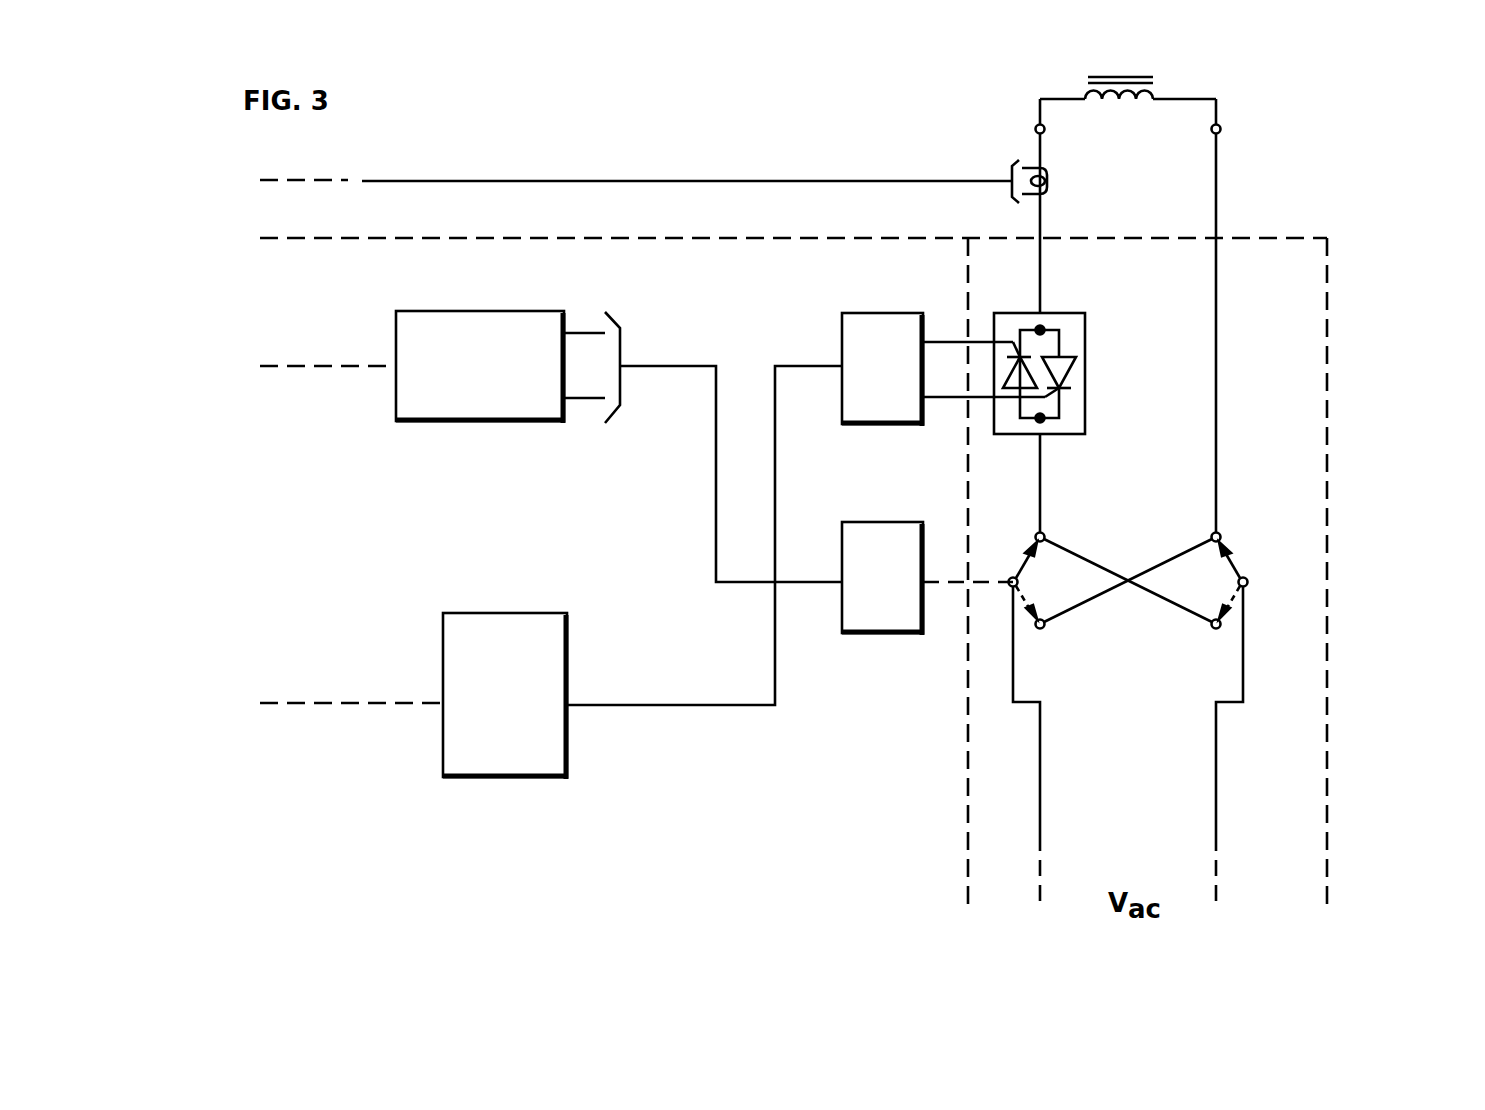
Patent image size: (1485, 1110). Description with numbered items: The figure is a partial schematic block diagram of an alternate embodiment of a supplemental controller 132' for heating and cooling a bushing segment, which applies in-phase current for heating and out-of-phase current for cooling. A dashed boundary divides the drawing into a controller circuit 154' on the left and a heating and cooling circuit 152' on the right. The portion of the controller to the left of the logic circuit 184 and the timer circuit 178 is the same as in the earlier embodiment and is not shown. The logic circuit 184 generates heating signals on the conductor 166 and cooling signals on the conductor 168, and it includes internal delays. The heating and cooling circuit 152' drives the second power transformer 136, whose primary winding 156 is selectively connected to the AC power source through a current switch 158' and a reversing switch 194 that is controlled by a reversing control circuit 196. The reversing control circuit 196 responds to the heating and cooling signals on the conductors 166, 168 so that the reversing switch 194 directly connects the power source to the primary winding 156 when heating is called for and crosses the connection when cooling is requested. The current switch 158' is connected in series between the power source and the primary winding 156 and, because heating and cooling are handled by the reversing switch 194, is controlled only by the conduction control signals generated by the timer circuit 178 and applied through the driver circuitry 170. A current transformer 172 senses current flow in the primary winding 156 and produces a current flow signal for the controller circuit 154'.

The supplemental controller 132' is at (864, 572).
The second power transformer 136 is at (1068, 76).
The primary winding 156 is at (1133, 100).
The current transformer 172 is at (1068, 186).
The current switch 158' is at (1102, 369).
The reversing switch 194 is at (1180, 522).
The logic circuit 184 is at (458, 311).
The conductor 166 is at (585, 330).
The conductor 168 is at (585, 400).
The driver circuitry 170 is at (893, 313).
The reversing control circuit 196 is at (880, 633).
The timer circuit 178 is at (507, 777).
The controller circuit 154' is at (776, 832).
The heating and cooling circuit 152' is at (1132, 832).